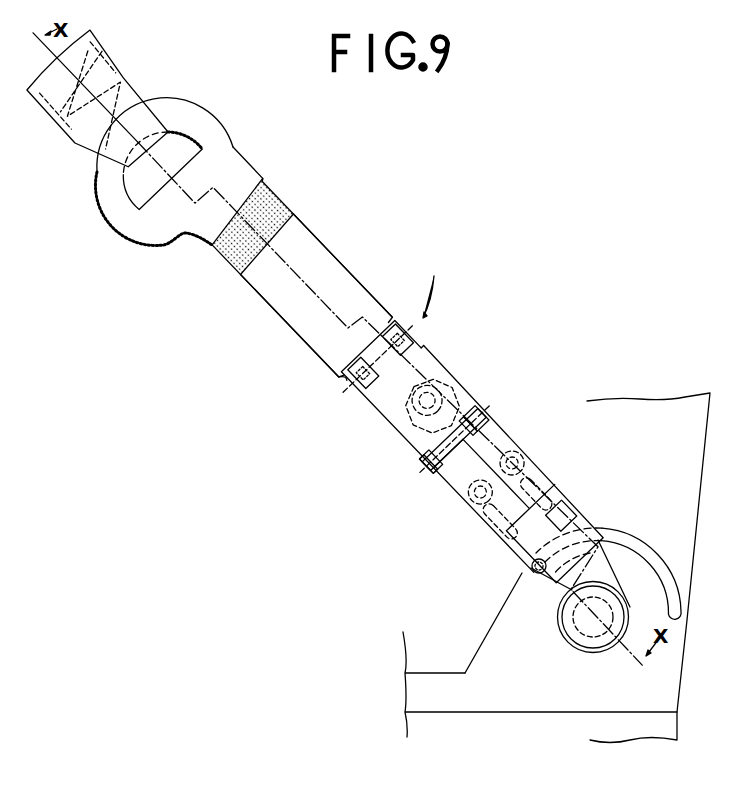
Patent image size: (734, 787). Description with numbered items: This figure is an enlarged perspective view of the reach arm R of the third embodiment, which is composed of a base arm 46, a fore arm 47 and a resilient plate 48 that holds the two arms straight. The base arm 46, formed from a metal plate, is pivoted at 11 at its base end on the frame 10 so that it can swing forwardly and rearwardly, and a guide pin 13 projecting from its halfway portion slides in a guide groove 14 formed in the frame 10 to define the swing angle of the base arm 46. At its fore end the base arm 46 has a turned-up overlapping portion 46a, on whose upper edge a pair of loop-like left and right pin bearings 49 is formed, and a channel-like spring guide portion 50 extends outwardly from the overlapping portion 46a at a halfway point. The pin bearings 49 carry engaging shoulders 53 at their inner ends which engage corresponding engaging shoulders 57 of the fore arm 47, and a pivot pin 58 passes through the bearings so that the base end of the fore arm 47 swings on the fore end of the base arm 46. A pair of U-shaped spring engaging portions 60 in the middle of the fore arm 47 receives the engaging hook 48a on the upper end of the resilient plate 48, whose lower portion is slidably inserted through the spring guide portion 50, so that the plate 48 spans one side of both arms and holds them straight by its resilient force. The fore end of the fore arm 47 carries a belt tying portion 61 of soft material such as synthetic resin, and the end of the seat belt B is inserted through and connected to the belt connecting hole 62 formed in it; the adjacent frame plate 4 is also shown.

The seat belt B is at (116, 56).
The reach arm R is at (432, 287).
The belt tying portion 61 is at (239, 160).
The belt connecting hole 62 is at (179, 130).
The fore arm 47 is at (358, 297).
The spring engaging portions 60 is at (402, 332).
The resilient plate 48 is at (388, 403).
The engaging hook 48a is at (347, 370).
The base arm 46 is at (548, 480).
The turned-up overlapping portion 46a is at (512, 440).
The pin bearings 49 is at (477, 417).
The engaging shoulders 53 is at (480, 412).
The engaging shoulders 57 is at (487, 425).
The pivot pin 58 is at (430, 468).
The spring guide portion 50 is at (577, 500).
The guide pin 13 is at (531, 568).
The guide groove 14 is at (627, 552).
The pivot 11 is at (590, 632).
The frame 10 is at (482, 645).
The frame plate 4 is at (693, 476).